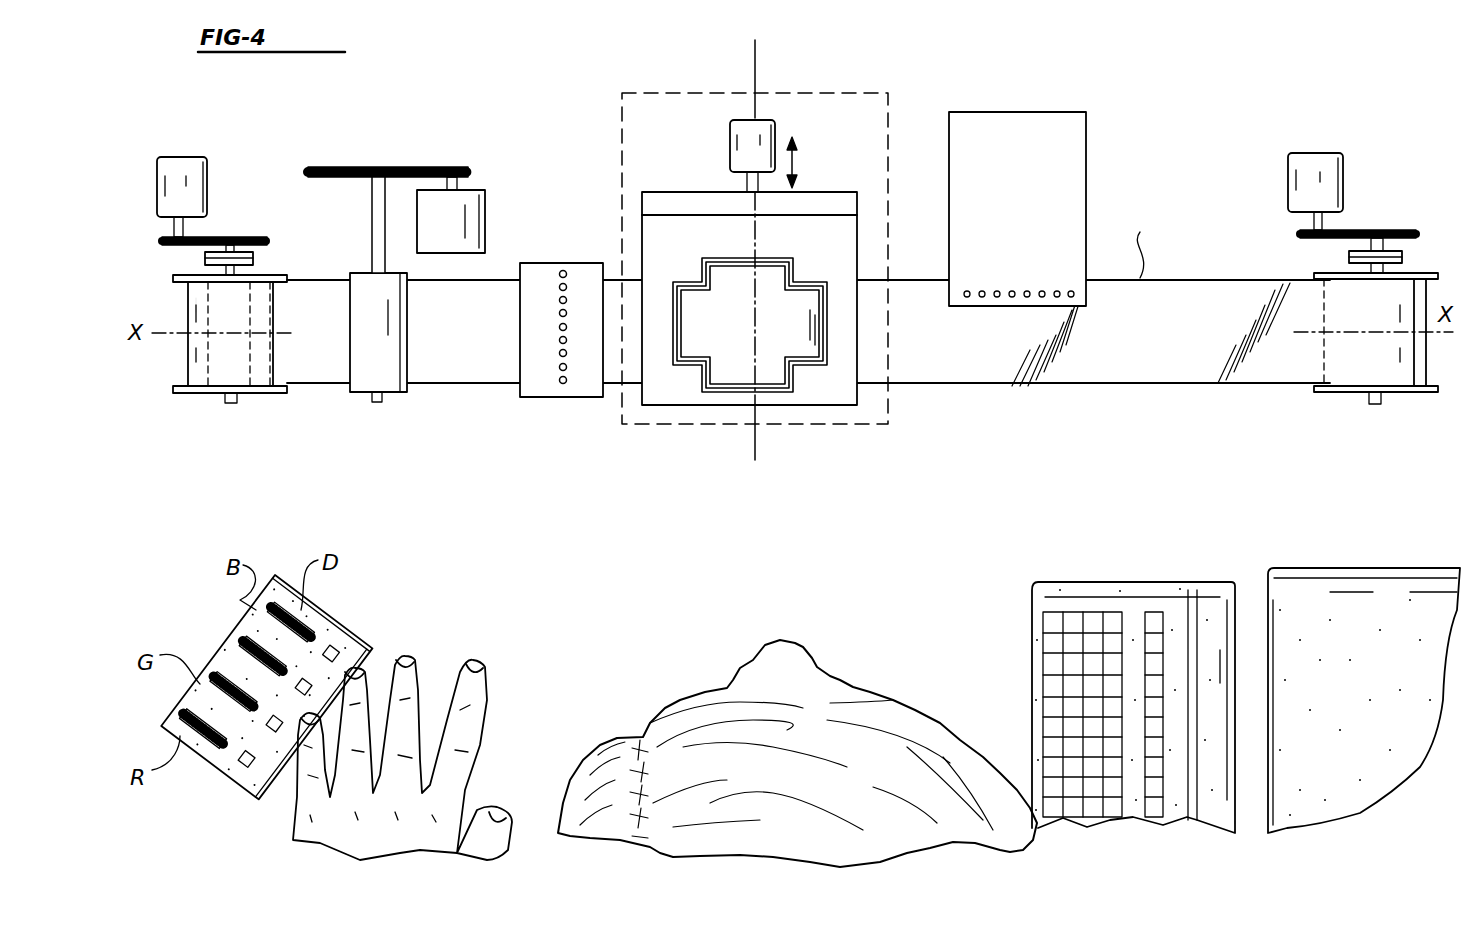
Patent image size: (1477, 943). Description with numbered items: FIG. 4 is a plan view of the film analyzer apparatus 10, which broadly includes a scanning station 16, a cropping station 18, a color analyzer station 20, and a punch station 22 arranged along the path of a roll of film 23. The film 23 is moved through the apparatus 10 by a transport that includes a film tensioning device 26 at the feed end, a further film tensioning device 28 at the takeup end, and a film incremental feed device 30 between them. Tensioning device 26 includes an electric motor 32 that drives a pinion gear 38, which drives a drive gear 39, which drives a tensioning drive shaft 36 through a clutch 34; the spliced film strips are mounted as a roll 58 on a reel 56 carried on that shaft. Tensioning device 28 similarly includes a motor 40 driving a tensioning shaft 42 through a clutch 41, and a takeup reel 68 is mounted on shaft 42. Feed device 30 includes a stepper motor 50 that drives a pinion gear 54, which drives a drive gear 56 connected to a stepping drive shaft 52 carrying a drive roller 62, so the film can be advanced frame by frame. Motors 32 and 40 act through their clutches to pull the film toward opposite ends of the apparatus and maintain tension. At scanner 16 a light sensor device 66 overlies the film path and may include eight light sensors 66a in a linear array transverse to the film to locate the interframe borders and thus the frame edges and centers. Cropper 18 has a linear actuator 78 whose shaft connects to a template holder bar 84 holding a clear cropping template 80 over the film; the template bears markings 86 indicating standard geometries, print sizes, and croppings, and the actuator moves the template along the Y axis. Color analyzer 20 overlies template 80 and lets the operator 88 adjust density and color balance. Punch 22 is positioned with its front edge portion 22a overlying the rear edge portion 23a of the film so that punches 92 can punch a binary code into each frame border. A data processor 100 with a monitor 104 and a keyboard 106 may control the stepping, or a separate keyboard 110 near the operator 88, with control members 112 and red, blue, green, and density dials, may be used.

The apparatus 10 is at (972, 83).
The scanning station 16 is at (596, 255).
The cropping station 18 is at (700, 178).
The color analyzer station 20 is at (888, 86).
The punch station 22 is at (1064, 227).
The front edge portion 22a is at (1078, 308).
The roll of film 23 is at (330, 359).
The rear edge portion 23a is at (1142, 240).
The film tensioning device 26 is at (176, 298).
The further film tensioning device 28 is at (1423, 246).
The film incremental feed device 30 is at (493, 182).
The electric motor 32 is at (181, 158).
The clutch 34 is at (205, 257).
The tensioning drive shaft 36 is at (232, 405).
The pinion gear 38 is at (162, 240).
The drive gear 39 is at (232, 237).
The motor 40 is at (1290, 160).
The clutch 41 is at (1349, 257).
The film tensioning shaft 42 is at (1374, 406).
The stepper motor 50 is at (480, 214).
The stepping drive shaft 52 is at (381, 402).
The pinion gear 54 is at (457, 168).
The drive gear 56 is at (185, 395).
The roll 58 is at (181, 359).
The drive roller 62 is at (400, 330).
The light sensor device 66 is at (539, 343).
The light sensors 66a is at (558, 372).
The takeup reel 68 is at (1330, 393).
The linear actuator 78 is at (775, 132).
The cropping template 80 is at (857, 258).
The template holder bar 84 is at (660, 192).
The markings 86 is at (813, 283).
The operator 88 is at (650, 710).
The punches 92 is at (1000, 302).
The data processor 100 is at (1364, 649).
The monitor 104 is at (1318, 578).
The keyboard 106 is at (1035, 610).
The separate keyboard 110 is at (203, 633).
The control members 112 is at (357, 632).